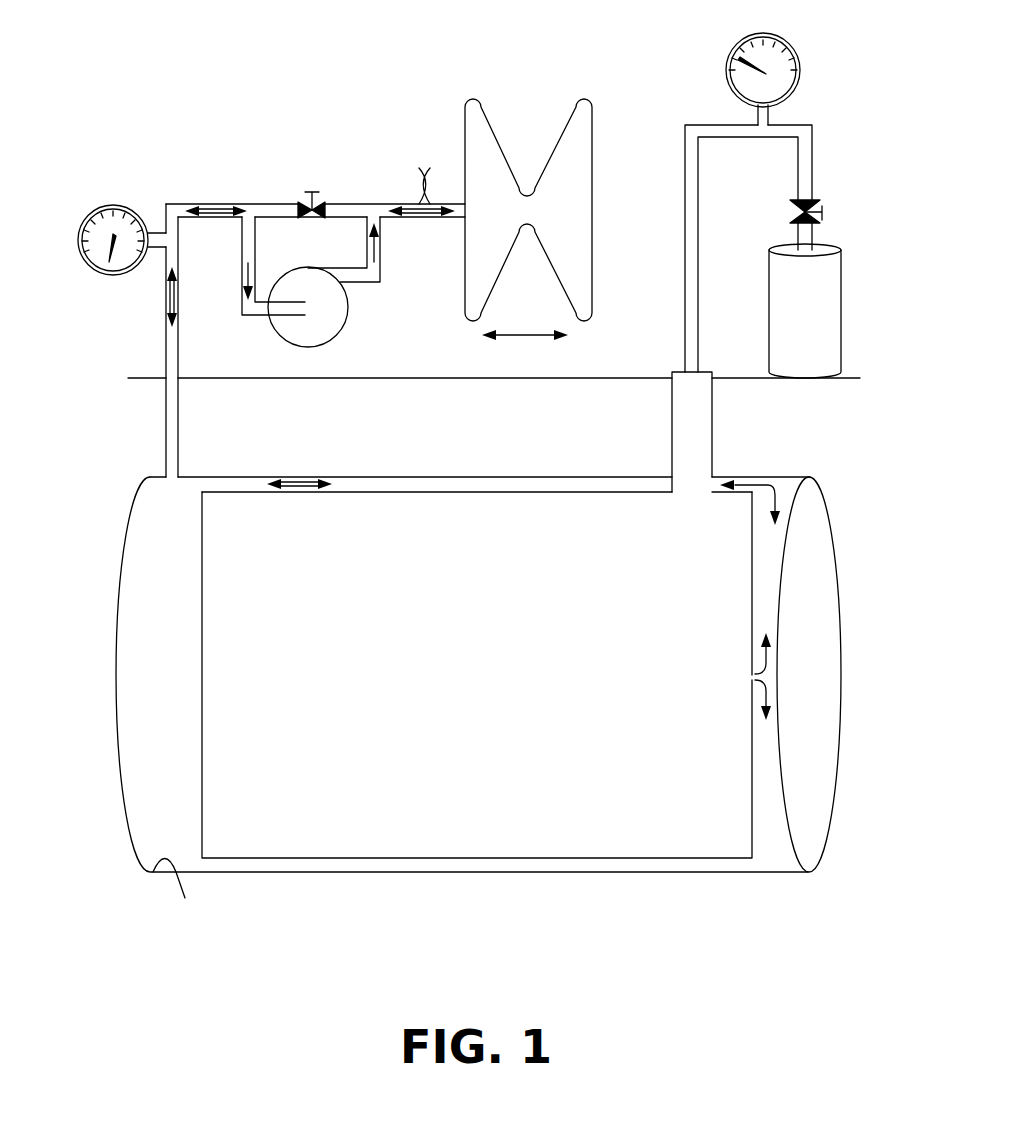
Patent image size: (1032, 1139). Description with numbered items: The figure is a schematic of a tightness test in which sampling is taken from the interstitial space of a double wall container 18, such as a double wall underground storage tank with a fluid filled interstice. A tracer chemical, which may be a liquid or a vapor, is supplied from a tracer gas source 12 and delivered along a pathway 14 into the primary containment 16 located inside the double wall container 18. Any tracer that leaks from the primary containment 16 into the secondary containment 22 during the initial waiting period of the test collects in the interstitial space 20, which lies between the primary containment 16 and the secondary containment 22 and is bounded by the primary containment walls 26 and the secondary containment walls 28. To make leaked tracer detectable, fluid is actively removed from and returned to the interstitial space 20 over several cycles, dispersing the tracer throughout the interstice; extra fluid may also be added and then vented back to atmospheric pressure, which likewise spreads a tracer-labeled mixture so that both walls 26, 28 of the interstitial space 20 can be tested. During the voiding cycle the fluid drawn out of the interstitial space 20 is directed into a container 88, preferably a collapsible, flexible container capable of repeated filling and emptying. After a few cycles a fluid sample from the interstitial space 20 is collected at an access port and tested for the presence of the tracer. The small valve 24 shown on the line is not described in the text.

The tracer gas source 12 is at (783, 310).
The pathway 14 is at (693, 268).
The primary containment 16 is at (463, 643).
The double wall container 18 is at (853, 681).
The interstitial space 20 is at (502, 487).
The secondary containment 22 is at (187, 895).
The bleed valve 24 is at (420, 177).
The primary containment walls 26 is at (203, 672).
The secondary containment walls 28 is at (115, 670).
The container 88 is at (575, 208).